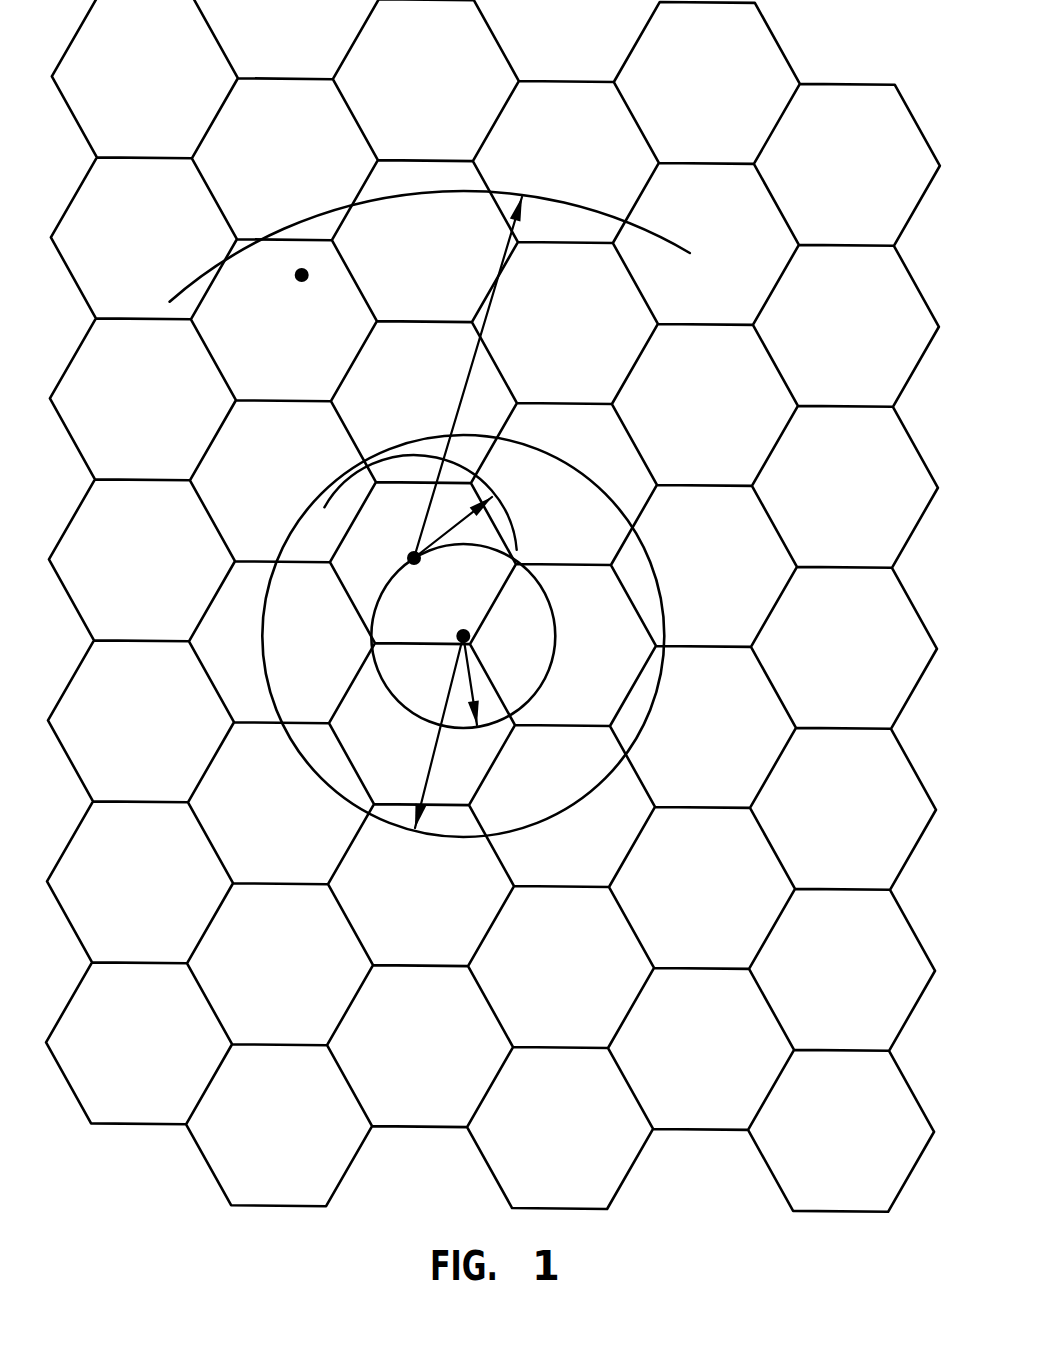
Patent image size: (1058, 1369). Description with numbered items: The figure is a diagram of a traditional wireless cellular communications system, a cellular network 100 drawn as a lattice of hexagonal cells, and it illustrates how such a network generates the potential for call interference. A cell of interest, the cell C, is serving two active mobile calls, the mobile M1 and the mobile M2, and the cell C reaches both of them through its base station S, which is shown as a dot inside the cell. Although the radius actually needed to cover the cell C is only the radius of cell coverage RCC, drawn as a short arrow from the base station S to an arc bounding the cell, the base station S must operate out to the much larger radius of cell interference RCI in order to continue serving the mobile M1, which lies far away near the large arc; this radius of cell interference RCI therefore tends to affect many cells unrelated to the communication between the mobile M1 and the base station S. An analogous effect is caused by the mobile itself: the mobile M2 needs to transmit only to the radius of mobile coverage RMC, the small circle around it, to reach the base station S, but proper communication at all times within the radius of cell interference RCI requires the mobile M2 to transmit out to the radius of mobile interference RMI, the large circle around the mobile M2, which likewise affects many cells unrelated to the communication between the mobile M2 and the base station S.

The cellular network 100 is at (787, 57).
The active mobile call M1 is at (286, 292).
The active mobile call M2 is at (463, 636).
The base station S is at (427, 571).
The cell C is at (367, 542).
The radius of cell interference RCI is at (482, 323).
The radius of cell coverage RCC is at (455, 526).
The radius of mobile coverage RMC is at (468, 670).
The radius of mobile interference RMI is at (425, 783).